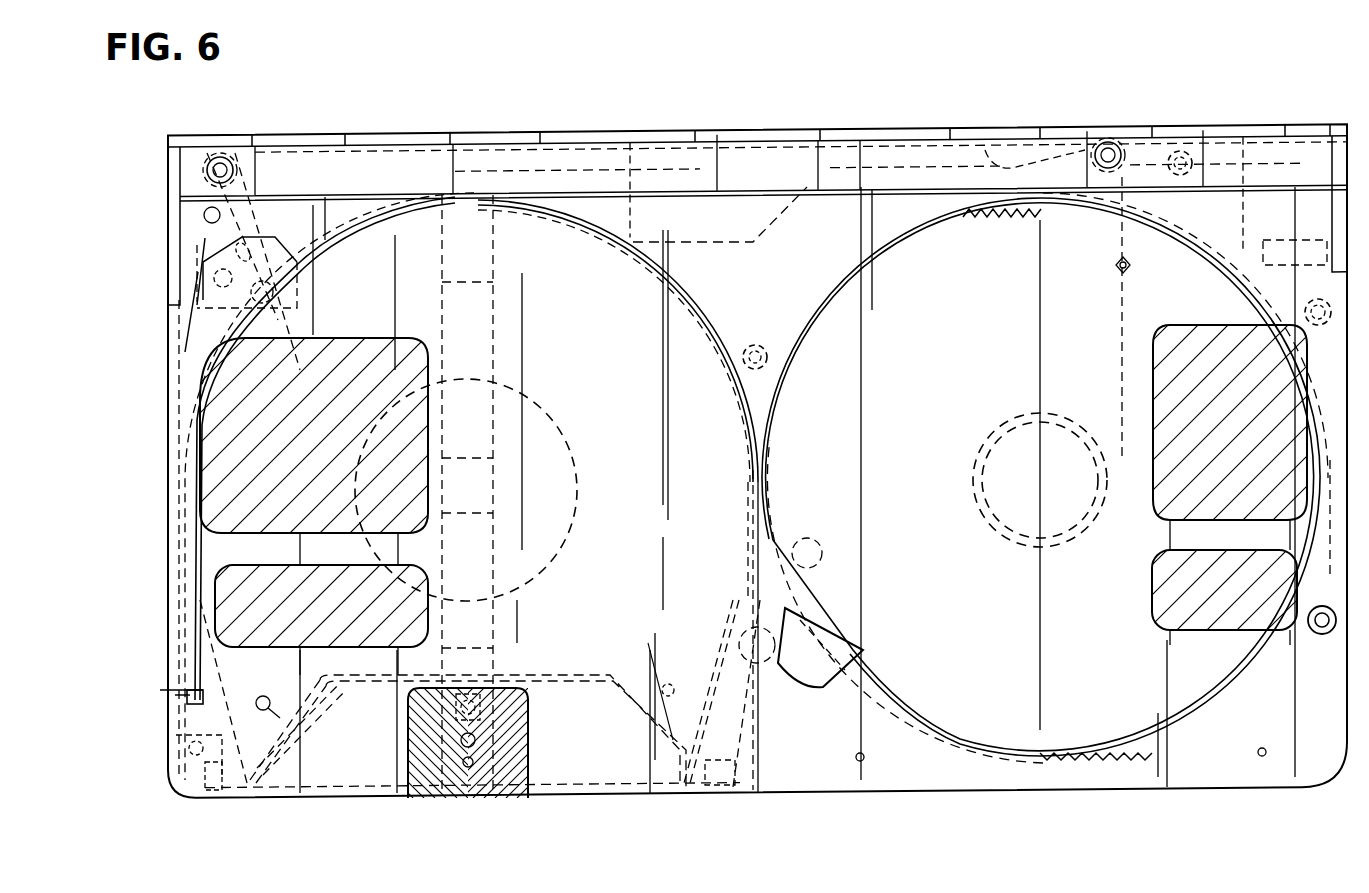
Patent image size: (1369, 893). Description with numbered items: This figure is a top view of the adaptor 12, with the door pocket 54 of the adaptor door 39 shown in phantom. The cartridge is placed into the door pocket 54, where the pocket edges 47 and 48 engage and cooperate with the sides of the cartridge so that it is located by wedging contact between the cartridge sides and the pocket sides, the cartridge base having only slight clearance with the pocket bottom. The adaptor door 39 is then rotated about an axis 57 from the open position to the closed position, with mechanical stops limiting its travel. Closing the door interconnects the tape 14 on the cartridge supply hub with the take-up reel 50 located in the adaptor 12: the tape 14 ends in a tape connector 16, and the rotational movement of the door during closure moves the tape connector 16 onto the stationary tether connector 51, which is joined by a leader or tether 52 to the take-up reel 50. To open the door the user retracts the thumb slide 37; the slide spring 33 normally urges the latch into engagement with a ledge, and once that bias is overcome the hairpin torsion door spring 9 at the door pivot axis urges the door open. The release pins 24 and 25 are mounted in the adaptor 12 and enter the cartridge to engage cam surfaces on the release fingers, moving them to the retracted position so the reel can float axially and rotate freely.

The adaptor 12 is at (932, 100).
The tape 14 is at (1112, 222).
The tape connector 16 is at (1116, 265).
The tether connector 51 is at (1131, 268).
The tether 52 is at (1118, 335).
The take-up reel 50 is at (1035, 548).
The door pocket 54 is at (690, 532).
The pocket edge 48 is at (732, 635).
The release pin 24 is at (663, 684).
The adaptor door 39 is at (762, 702).
The axis 57 is at (738, 786).
The thumb slide 37 is at (493, 796).
The slide spring 33 is at (517, 775).
The release pin 25 is at (288, 720).
The pocket edge 47 is at (220, 672).
The hairpin torsion door spring 9 is at (195, 702).